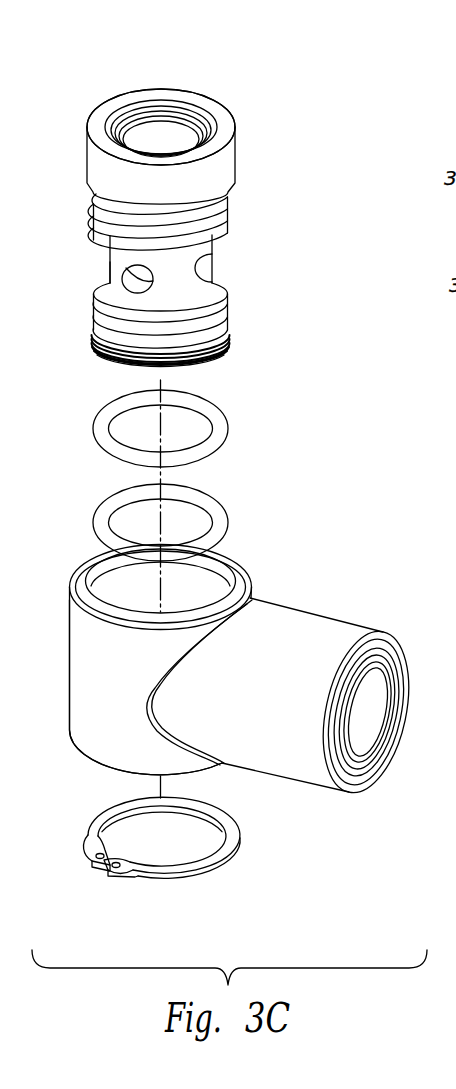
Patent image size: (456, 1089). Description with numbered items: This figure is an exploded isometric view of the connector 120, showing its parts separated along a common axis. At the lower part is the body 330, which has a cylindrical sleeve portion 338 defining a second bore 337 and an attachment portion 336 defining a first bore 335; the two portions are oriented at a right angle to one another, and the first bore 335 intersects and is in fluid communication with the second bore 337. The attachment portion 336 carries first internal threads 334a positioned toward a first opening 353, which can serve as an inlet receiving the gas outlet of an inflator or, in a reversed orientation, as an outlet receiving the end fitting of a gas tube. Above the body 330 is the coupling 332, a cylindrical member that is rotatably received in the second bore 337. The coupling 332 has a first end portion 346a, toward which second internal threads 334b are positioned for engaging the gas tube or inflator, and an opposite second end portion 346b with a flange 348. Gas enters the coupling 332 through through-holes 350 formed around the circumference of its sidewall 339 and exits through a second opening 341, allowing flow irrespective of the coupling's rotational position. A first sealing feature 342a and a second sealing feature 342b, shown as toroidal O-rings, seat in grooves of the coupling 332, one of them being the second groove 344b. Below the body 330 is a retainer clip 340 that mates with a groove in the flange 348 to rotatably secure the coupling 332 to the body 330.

The connector 120 is at (286, 143).
The second opening 341 is at (142, 97).
The first end portion 346a is at (86, 136).
The second internal threads 334b is at (172, 106).
The coupling 332 is at (93, 252).
The first internal threads 334a is at (208, 225).
The through-holes 350 is at (154, 291).
The sidewall 339 is at (106, 275).
The second groove 344b is at (208, 324).
The second end portion 346b is at (226, 333).
The flange 348 is at (106, 364).
The first sealing feature 342a is at (230, 434).
The second sealing feature 342b is at (225, 520).
The body 330 is at (328, 587).
The second bore 337 is at (108, 588).
The sleeve portion 338 is at (72, 700).
The attachment portion 336 is at (340, 624).
The first opening 353 is at (400, 690).
The first bore 335 is at (380, 717).
The retainer clip 340 is at (128, 878).